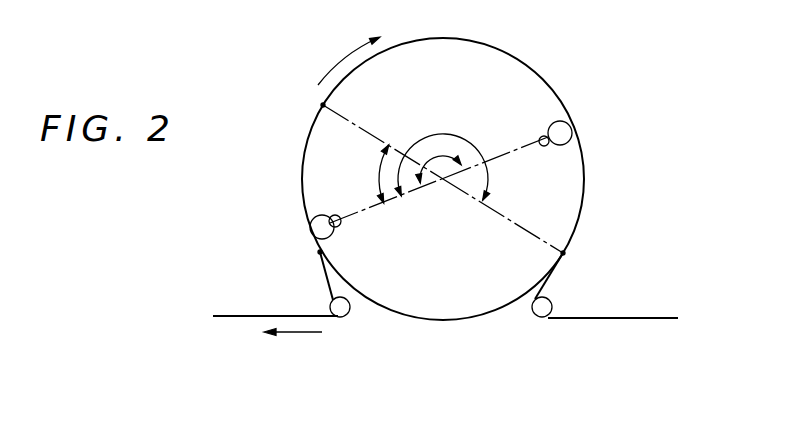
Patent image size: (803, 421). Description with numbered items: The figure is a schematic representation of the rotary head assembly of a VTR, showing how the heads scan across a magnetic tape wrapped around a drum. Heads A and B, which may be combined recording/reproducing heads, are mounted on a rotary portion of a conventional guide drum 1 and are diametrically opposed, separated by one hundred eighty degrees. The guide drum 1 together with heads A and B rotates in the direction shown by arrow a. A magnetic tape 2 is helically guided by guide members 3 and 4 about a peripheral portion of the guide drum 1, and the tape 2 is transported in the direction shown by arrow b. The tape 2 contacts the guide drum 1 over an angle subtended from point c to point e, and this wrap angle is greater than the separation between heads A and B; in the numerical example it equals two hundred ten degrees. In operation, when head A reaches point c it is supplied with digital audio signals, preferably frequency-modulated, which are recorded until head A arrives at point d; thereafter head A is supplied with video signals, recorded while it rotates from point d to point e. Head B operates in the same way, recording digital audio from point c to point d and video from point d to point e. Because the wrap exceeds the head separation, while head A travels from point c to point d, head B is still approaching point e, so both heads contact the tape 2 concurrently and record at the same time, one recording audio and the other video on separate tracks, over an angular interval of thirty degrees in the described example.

The guide drum 1 is at (441, 321).
The magnetic tape 2 is at (646, 319).
The guide member 3 is at (543, 318).
The guide member 4 is at (346, 318).
The arrow a is at (350, 57).
The arrow b is at (297, 334).
The head A is at (312, 213).
The head B is at (571, 136).
The point c is at (320, 253).
The point d is at (321, 105).
The point e is at (565, 253).